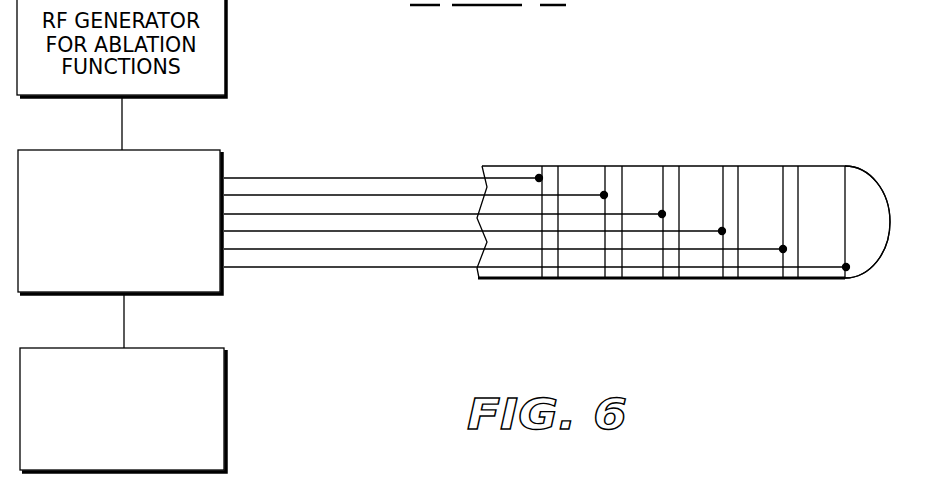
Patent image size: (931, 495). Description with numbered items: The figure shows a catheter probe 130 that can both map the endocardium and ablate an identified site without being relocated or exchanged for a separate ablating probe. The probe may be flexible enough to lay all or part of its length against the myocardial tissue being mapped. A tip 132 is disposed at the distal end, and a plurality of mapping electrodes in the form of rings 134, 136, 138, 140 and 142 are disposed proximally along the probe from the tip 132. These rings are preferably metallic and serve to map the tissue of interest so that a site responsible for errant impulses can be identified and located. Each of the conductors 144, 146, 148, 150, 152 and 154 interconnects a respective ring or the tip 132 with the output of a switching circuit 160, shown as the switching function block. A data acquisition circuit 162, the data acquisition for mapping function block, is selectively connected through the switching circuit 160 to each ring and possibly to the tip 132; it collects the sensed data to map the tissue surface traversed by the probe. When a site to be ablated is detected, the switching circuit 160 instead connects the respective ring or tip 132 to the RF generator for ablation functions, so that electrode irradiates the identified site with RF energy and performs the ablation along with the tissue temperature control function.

The catheter probe 130 is at (823, 141).
The tip 132 is at (875, 178).
The ring 134 is at (803, 125).
The ring 136 is at (741, 125).
The ring 138 is at (683, 125).
The ring 140 is at (624, 125).
The ring 142 is at (551, 166).
The conductor 144 is at (368, 268).
The conductor 146 is at (315, 250).
The conductor 148 is at (260, 232).
The conductor 150 is at (378, 213).
The conductor 152 is at (255, 194).
The conductor 154 is at (317, 177).
The switching circuit 160 is at (189, 138).
The data acquisition circuit 162 is at (226, 378).